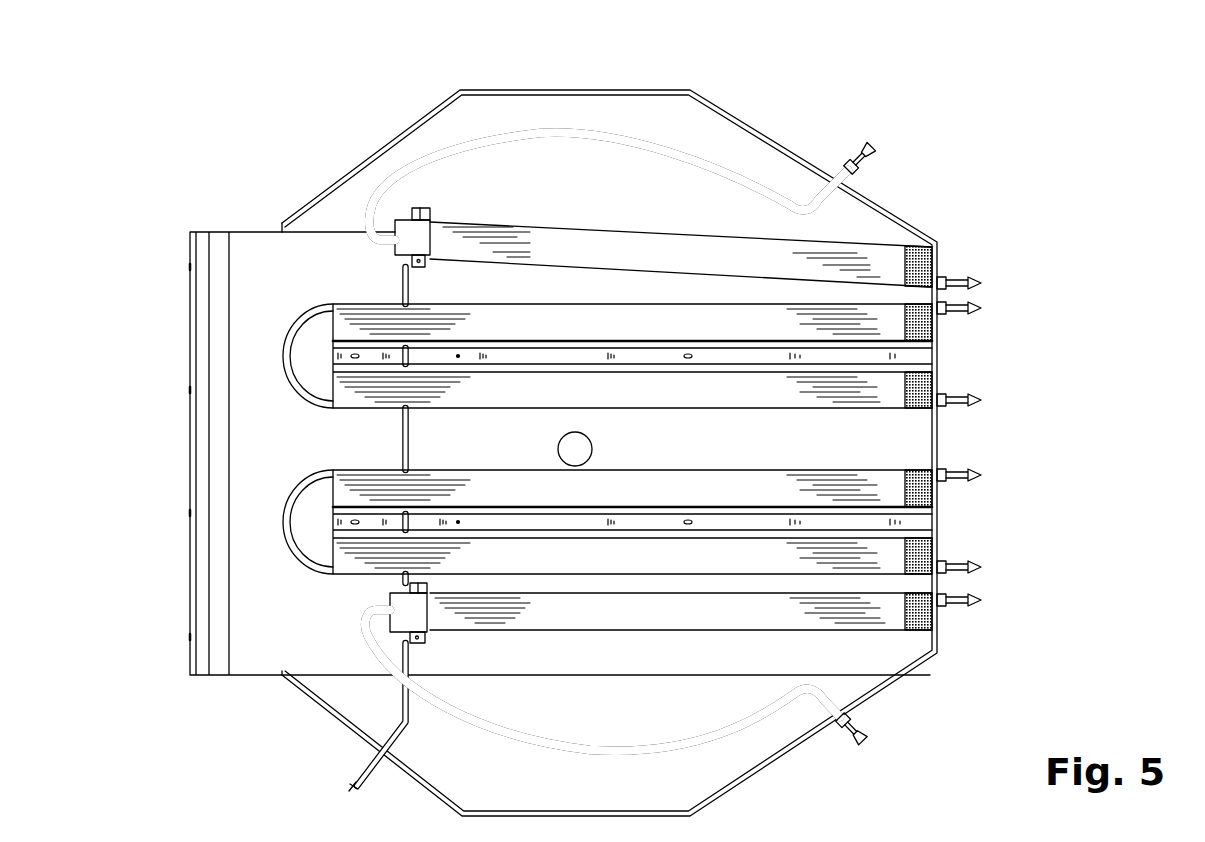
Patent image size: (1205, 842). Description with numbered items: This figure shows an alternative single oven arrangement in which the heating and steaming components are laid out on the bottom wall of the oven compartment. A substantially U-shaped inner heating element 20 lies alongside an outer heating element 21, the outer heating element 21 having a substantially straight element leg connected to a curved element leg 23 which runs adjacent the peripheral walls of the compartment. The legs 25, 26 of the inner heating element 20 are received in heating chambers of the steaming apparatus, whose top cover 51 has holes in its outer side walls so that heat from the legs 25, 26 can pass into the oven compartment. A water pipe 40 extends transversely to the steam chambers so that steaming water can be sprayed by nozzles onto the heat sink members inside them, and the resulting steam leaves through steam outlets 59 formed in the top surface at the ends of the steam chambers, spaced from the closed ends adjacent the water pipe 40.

The inner heating element 20 is at (305, 482).
The outer heating element 21 is at (952, 603).
The curved element leg 23 is at (581, 132).
The leg of the heating element 25 is at (957, 472).
The leg of the heating element 26 is at (955, 563).
The water pipe 40 is at (400, 282).
The top cover 51 is at (880, 382).
The steam outlet 59 is at (927, 387).